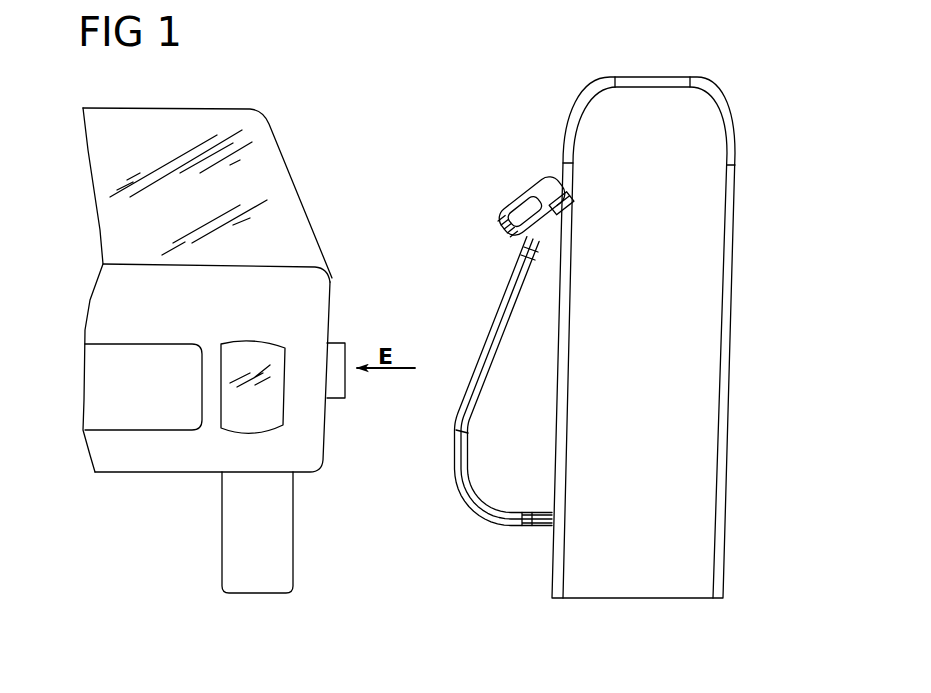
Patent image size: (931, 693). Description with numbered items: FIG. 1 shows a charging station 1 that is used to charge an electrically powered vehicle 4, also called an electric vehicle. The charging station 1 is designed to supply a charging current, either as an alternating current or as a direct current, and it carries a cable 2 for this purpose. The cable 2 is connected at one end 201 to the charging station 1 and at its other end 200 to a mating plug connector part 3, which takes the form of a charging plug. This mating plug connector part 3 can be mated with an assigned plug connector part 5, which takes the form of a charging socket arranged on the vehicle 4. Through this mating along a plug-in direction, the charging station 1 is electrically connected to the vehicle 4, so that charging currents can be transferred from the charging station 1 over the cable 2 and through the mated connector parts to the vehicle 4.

The charging station 1 is at (742, 94).
The cable 2 is at (468, 523).
The mating plug connector part 3 is at (527, 172).
The electrically powered vehicle 4 is at (284, 100).
The plug connector part 5 is at (332, 373).
The end 200 is at (516, 254).
The end 201 is at (529, 531).